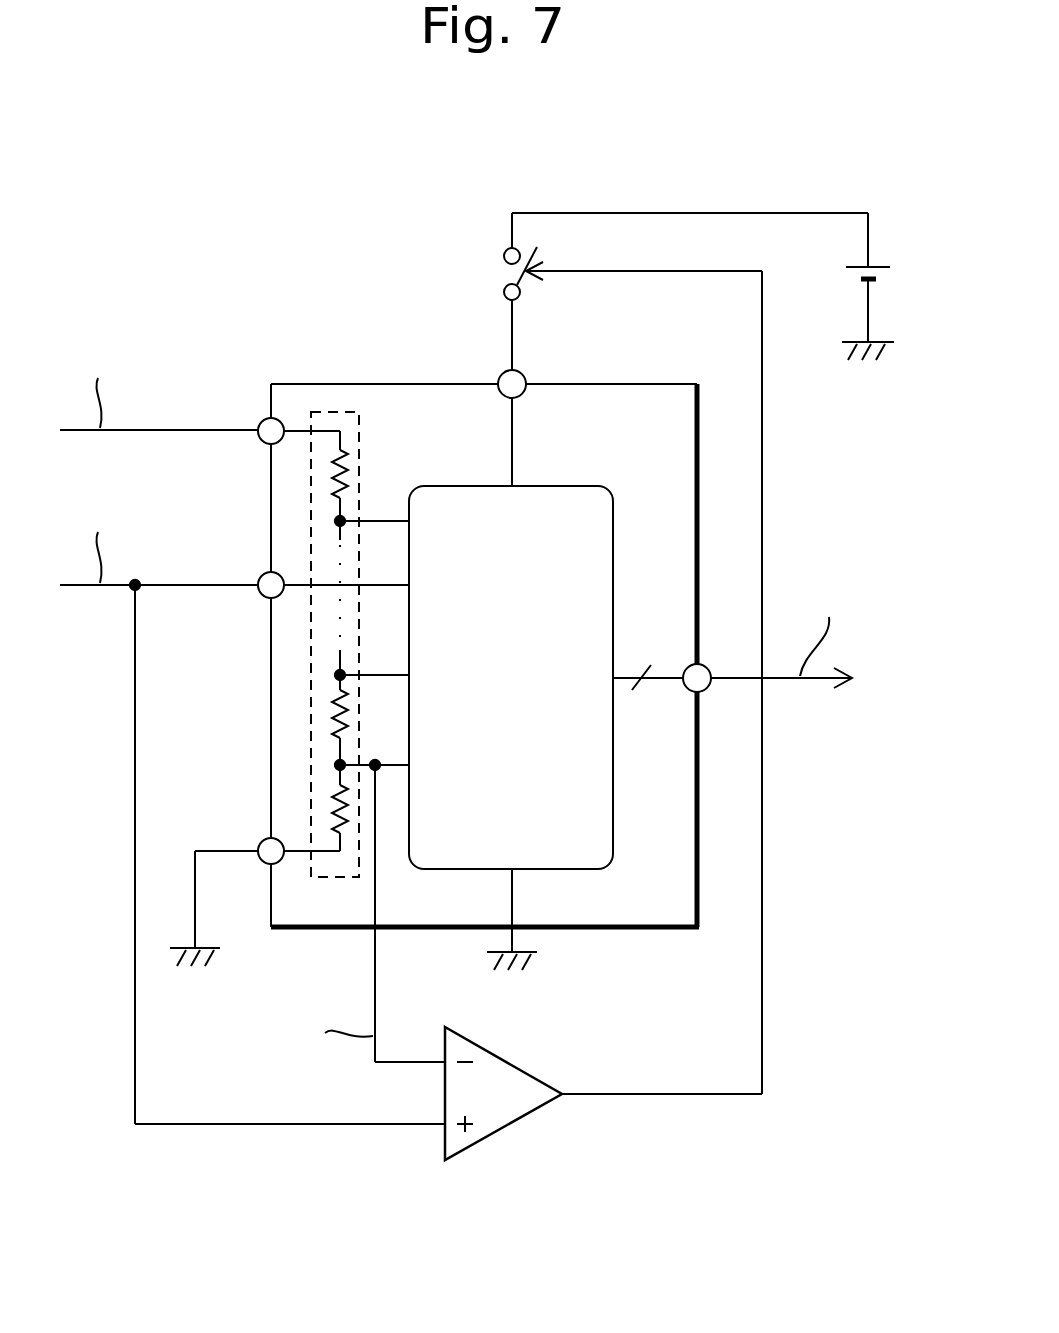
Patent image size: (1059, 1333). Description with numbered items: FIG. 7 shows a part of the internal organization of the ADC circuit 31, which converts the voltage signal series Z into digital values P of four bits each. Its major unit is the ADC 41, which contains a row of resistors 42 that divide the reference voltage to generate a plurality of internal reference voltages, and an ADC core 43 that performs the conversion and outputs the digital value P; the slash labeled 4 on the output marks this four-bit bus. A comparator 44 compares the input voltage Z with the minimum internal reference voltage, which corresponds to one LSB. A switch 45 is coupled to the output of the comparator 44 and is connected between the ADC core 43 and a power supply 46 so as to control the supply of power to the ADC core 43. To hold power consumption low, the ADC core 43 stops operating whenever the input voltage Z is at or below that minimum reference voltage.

The ADC circuit 31 is at (135, 166).
The ADC 41 is at (648, 930).
The row of resistors 42 is at (362, 440).
The ADC core 43 is at (572, 484).
The comparator 44 is at (512, 1126).
The switch 45 is at (518, 282).
The power supply 46 is at (880, 263).
The output bus width 4 is at (732, 656).